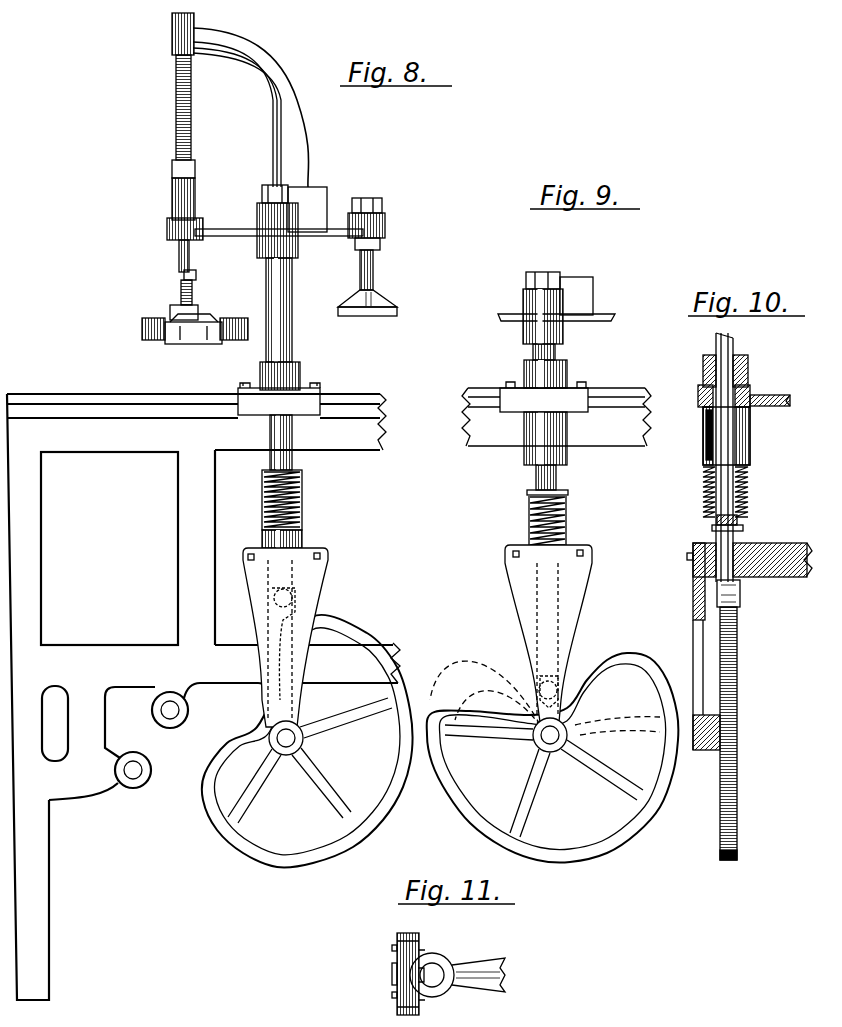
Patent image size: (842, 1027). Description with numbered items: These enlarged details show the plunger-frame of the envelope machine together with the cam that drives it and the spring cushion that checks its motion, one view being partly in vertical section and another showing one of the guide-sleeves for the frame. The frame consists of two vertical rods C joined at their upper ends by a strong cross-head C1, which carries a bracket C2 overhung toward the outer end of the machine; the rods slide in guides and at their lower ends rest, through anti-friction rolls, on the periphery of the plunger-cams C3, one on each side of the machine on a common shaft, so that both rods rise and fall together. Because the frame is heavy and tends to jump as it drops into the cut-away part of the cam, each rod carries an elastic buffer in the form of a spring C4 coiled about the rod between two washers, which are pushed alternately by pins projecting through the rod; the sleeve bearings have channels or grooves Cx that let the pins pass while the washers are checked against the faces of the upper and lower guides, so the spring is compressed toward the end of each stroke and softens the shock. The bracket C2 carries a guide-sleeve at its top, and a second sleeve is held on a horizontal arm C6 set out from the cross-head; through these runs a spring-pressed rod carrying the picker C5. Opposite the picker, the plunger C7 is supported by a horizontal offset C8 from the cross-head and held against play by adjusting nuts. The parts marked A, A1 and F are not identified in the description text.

In FIG. 8, the frame A is at (45, 636).
In FIG. 10, the frame A is at (762, 545).
In FIG. 11, the frame A is at (495, 968).
In FIG. 8, the frame rail A1 is at (90, 390).
In FIG. 9, the frame rail A1 is at (556, 401).
In FIG. 10, the frame rail A1 is at (767, 393).
In FIG. 8, the vertical rods C is at (291, 348).
In FIG. 9, the vertical rods C is at (567, 440).
In FIG. 10, the vertical rods C is at (750, 430).
In FIG. 11, the vertical rods C is at (432, 995).
In FIG. 8, the cross-head C1 is at (275, 228).
In FIG. 9, the cross-head C1 is at (565, 290).
In FIG. 10, the cross-head C1 is at (741, 598).
In FIG. 8, the bracket C2 is at (293, 153).
In FIG. 9, the bracket C2 is at (558, 737).
In FIG. 8, the plunger-cams C3 is at (265, 478).
In FIG. 9, the plunger-cams C3 is at (455, 790).
In FIG. 10, the plunger-cams C3 is at (750, 463).
In FIG. 8, the elastic buffer spring C4 is at (301, 506).
In FIG. 9, the elastic buffer spring C4 is at (556, 492).
In FIG. 10, the elastic buffer spring C4 is at (703, 385).
In FIG. 8, the picker C5 is at (170, 38).
In FIG. 8, the horizontal arm C6 is at (215, 230).
In FIG. 9, the horizontal arm C6 is at (507, 316).
In FIG. 8, the plunger C7 is at (176, 118).
In FIG. 8, the horizontal offset C8 is at (322, 232).
In FIG. 9, the horizontal offset C8 is at (578, 318).
In FIG. 10, the channels or grooves Cx is at (705, 441).
In FIG. 11, the channels or grooves Cx is at (462, 962).
In FIG. 8, the valve F is at (172, 343).